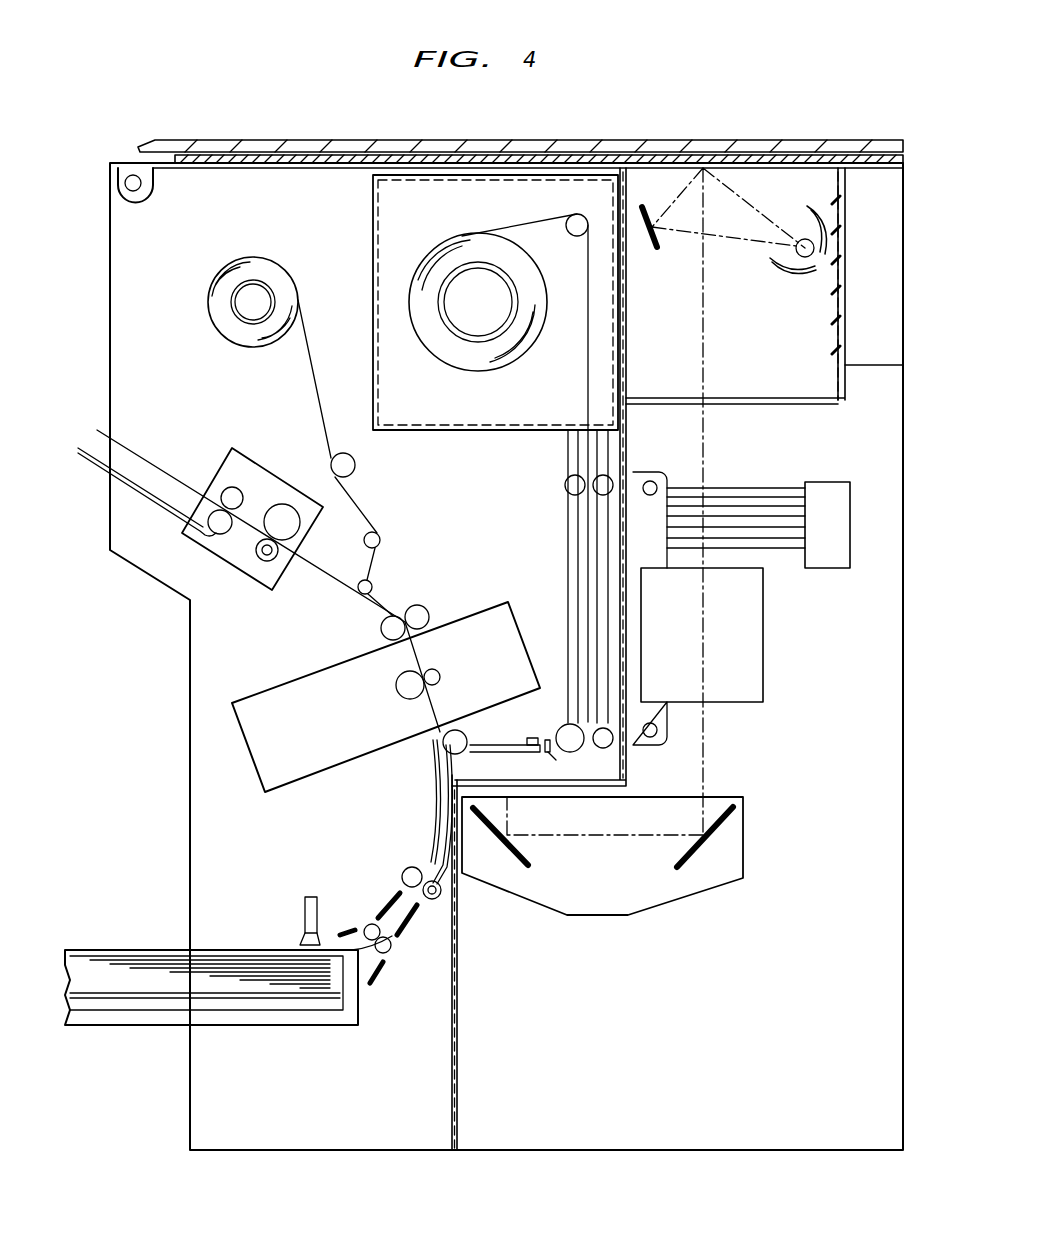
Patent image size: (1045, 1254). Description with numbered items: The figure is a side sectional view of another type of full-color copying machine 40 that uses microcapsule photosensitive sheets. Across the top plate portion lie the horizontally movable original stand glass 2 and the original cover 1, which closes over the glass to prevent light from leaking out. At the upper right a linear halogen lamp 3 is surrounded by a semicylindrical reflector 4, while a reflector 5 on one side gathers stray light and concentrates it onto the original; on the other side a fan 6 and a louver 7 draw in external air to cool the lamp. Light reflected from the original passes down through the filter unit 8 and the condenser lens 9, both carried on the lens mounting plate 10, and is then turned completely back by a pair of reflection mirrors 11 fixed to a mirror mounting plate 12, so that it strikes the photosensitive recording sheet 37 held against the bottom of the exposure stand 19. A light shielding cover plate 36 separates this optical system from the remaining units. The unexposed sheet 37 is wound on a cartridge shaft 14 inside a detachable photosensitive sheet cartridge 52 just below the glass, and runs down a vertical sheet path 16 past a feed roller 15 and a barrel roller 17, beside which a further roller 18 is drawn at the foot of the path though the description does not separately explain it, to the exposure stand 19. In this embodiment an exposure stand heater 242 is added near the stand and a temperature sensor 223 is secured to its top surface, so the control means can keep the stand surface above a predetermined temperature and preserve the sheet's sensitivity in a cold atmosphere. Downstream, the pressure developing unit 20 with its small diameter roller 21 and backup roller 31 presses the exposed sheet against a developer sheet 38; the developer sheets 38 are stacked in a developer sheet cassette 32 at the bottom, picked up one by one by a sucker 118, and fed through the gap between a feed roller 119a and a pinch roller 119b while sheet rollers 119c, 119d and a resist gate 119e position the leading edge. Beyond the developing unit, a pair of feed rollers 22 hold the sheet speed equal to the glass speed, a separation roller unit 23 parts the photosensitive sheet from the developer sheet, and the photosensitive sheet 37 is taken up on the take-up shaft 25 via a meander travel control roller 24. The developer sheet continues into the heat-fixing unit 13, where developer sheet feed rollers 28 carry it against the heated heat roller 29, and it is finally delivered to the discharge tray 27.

The copying machine 40 is at (122, 148).
The original cover 1 is at (510, 142).
The original stand glass 2 is at (591, 154).
The halogen lamp 3 is at (800, 238).
The semicylindrical reflector 4 is at (814, 205).
The reflector 5 is at (650, 207).
The fan 6 is at (885, 190).
The louver 7 is at (834, 200).
The filter unit 8 is at (786, 549).
The condenser lens 9 is at (764, 674).
The lens mounting plate 10 is at (659, 733).
The reflection mirrors 11 is at (521, 862).
The mirror mounting plate 12 is at (742, 865).
The heat-fixing unit 13 is at (253, 455).
The cartridge shaft 14 is at (462, 316).
The feed roller 15 is at (565, 485).
The vertical sheet path 16 is at (567, 526).
The barrel roller 17 is at (571, 752).
The roller 18 is at (604, 748).
The exposure stand 19 is at (532, 753).
The pressure developing unit 20 is at (231, 703).
The small diameter roller 21 is at (441, 676).
The feed rollers 22 is at (425, 603).
The separation roller unit 23 is at (380, 575).
The meander travel control roller 24 is at (355, 467).
The take-up shaft 25 is at (255, 290).
The discharge tray 27 is at (120, 495).
The developer sheet feed rollers 28 is at (216, 530).
The heat roller 29 is at (262, 560).
The backup roller 31 is at (396, 688).
The developer sheet cassette 32 is at (259, 1026).
The light shielding cover plate 36 is at (458, 1026).
The photosensitive recording sheet 37 is at (587, 393).
The developer sheets 38 is at (116, 950).
The photosensitive sheet cartridge 52 is at (372, 256).
The sucker 118 is at (305, 897).
The feed roller 119a is at (368, 925).
The pinch roller 119b is at (390, 958).
The sheet roller 119c is at (405, 868).
The sheet roller 119d is at (390, 950).
The resist gate 119e is at (426, 855).
The temperature sensor 223 is at (533, 738).
The exposure stand heater 242 is at (549, 753).